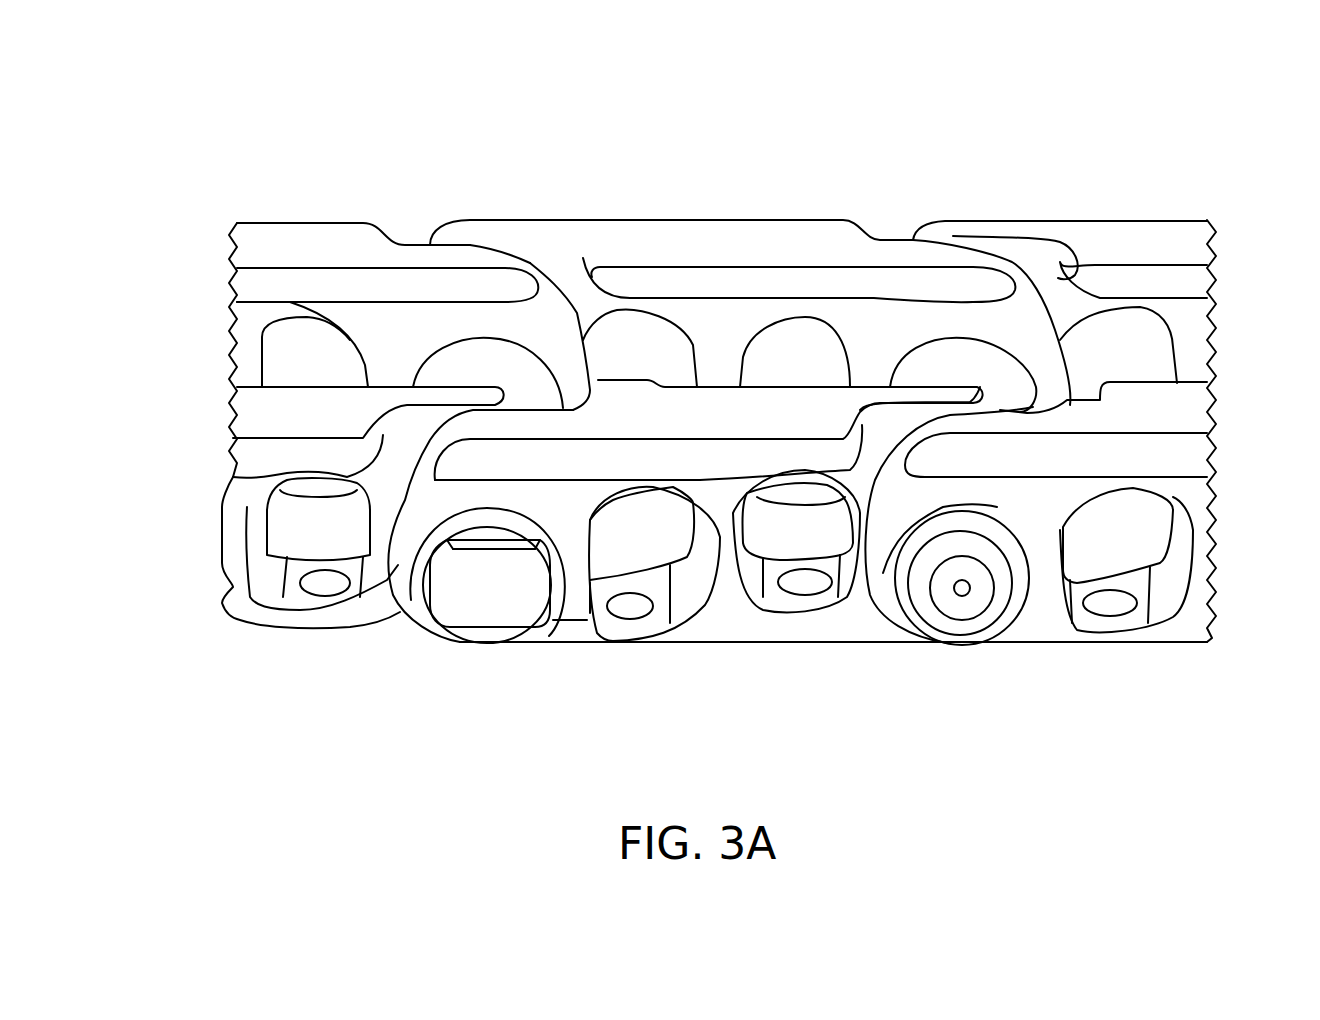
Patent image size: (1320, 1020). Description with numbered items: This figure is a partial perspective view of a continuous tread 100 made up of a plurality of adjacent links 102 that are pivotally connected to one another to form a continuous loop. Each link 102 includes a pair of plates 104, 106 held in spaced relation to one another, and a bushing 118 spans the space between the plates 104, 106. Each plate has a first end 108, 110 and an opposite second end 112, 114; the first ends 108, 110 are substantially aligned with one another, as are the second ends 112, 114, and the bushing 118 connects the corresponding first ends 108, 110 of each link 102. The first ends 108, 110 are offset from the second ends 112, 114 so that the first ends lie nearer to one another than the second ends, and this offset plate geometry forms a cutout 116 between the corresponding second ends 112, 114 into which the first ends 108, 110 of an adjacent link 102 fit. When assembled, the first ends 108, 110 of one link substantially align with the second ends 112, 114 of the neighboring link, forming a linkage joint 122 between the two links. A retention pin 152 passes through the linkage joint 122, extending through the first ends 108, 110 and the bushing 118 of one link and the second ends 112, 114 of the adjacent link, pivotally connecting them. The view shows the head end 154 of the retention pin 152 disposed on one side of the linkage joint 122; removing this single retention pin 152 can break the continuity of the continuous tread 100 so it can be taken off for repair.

The continuous tread 100 is at (285, 148).
The link 102 is at (328, 207).
The plate 104 is at (270, 237).
The plate 106 is at (248, 600).
The first end 108 is at (540, 313).
The first end 110 is at (513, 402).
The second end 112 is at (460, 237).
The second end 114 is at (420, 593).
The cutout 116 is at (531, 250).
The bushing 118 is at (517, 368).
The linkage joint 122 is at (507, 670).
The retention pin 152 is at (480, 600).
The head end 154 is at (455, 593).